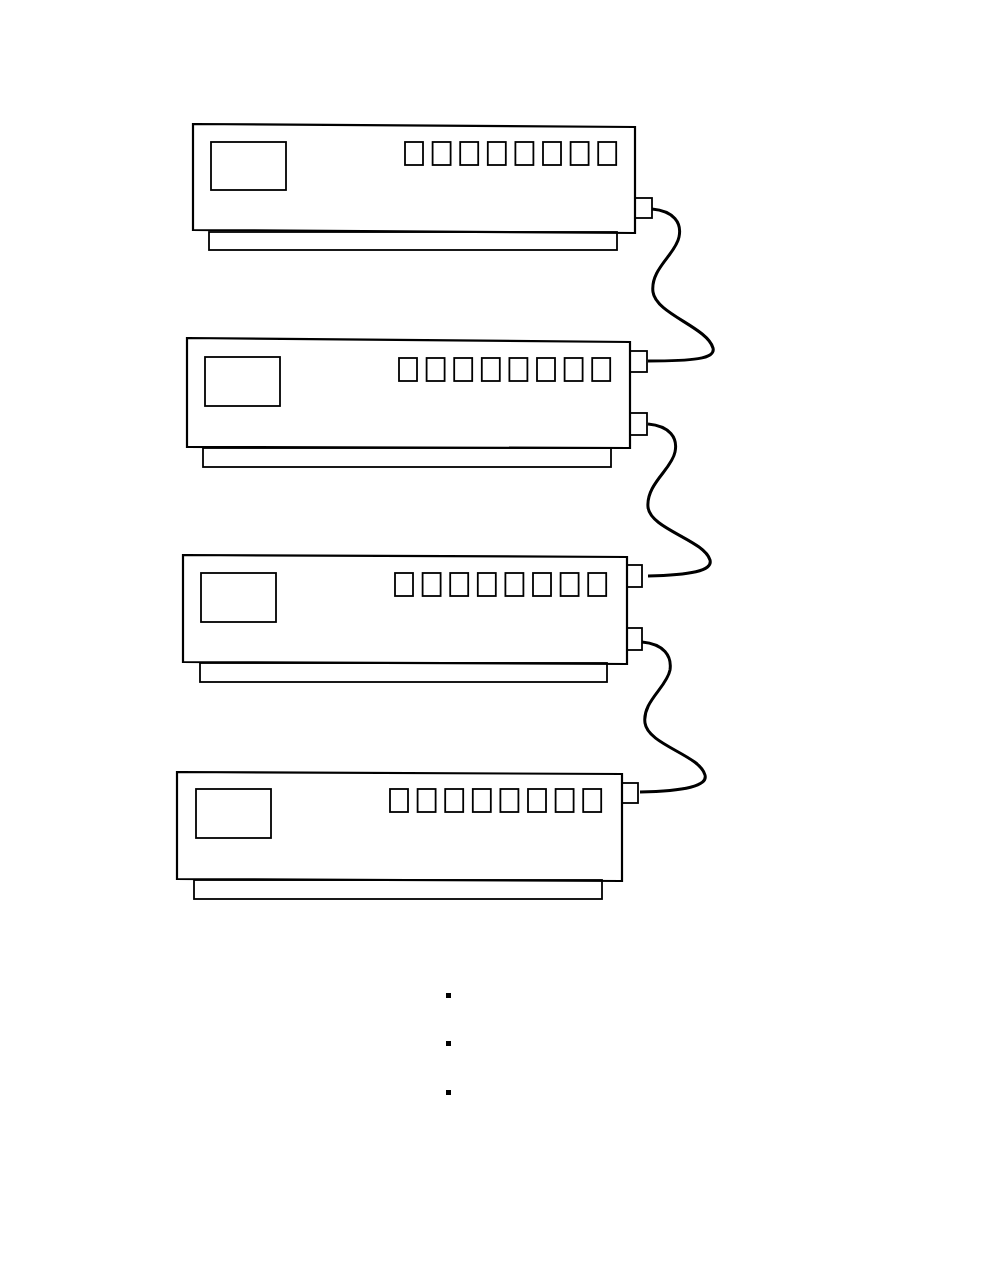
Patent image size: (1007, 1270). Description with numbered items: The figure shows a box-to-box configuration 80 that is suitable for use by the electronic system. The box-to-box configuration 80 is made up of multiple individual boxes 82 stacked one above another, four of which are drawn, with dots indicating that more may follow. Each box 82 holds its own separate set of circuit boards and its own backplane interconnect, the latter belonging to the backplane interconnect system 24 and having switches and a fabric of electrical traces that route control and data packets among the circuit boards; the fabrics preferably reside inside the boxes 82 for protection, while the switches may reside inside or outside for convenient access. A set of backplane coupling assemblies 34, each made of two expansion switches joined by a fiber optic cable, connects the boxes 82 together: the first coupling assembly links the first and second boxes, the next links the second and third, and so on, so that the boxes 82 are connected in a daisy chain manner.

The box-to-box configuration 80 is at (90, 78).
The boxes 82 is at (108, 165).
The backplane interconnect system 24 is at (760, 101).
The backplane coupling assemblies 34 is at (814, 171).